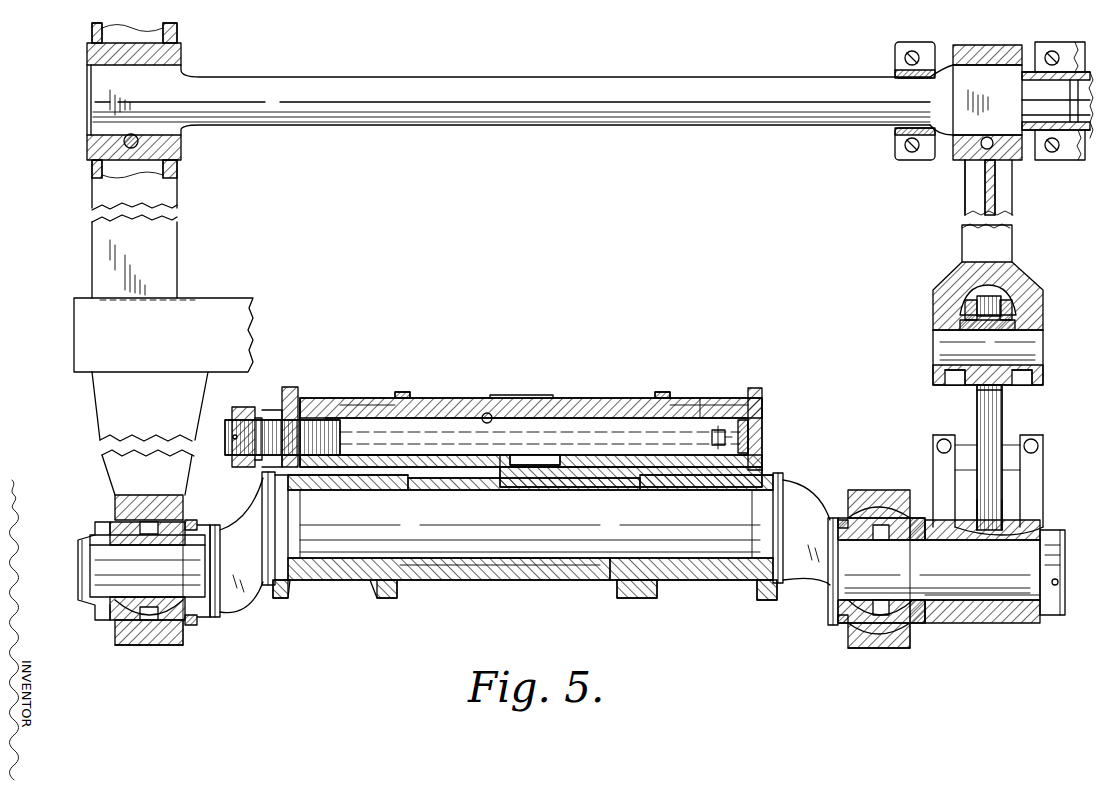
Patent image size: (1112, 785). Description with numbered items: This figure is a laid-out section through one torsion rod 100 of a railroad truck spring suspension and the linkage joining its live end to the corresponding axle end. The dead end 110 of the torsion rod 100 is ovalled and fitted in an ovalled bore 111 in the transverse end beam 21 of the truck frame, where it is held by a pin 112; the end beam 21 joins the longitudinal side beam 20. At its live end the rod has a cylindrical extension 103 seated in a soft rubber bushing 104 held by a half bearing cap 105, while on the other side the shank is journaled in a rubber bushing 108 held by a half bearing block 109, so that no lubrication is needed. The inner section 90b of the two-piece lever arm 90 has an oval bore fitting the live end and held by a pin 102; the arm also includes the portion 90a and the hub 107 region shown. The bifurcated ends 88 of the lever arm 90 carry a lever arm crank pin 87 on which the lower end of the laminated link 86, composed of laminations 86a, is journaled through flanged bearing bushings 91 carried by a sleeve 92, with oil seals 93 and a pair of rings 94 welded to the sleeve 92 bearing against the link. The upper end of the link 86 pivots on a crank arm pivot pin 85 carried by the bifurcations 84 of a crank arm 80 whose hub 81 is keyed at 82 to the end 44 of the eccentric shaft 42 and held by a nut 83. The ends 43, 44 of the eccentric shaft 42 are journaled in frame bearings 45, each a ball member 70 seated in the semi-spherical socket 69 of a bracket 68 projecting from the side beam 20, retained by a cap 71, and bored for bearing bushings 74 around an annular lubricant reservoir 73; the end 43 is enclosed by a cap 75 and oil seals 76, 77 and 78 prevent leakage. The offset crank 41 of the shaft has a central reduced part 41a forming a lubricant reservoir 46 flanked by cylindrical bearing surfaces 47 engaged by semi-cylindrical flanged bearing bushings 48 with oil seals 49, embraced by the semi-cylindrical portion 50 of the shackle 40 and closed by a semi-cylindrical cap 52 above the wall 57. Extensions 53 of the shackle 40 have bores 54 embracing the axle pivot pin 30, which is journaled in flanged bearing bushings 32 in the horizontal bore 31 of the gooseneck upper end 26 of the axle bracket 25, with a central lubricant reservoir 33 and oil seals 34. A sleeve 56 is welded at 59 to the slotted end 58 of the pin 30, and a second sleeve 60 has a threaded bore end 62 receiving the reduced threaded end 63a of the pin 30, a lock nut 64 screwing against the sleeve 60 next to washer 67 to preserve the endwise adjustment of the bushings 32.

The longitudinal side beam 20 is at (80, 337).
The transverse end beam 21 is at (177, 208).
The axle bracket 25 is at (532, 398).
The upper end of axle bracket 26 is at (505, 395).
The axle pivot pin 30 is at (590, 398).
The horizontal bore 31 is at (484, 402).
The flanged bearing bushing 32 is at (478, 396).
The lubricant reservoir 33 is at (560, 395).
The oil seal 34 is at (402, 396).
The shackle or link 40 is at (792, 398).
The offset central part or crank 41 is at (572, 560).
The central reduced part 41a is at (512, 580).
The crank or eccentric shaft 42 is at (816, 478).
The end of eccentric shaft 43 is at (100, 555).
The end of eccentric shaft 44 is at (940, 570).
The frame bearing 45 is at (198, 640).
The lubricant reservoir 46 is at (513, 560).
The cylindrical bearing surface 47 is at (522, 528).
The semi-cylindrical flanged bearing bushing 48 is at (350, 490).
The oil seal 49 is at (267, 590).
The semi-cylindrical portion 50 is at (458, 496).
The semi-cylindrical cap 52 is at (632, 580).
The extension 53 is at (287, 388).
The bore 54 is at (375, 397).
The sleeve 56 is at (718, 398).
The tube bottom wall 57 is at (360, 578).
The slot 58 is at (750, 440).
The weld 59 is at (758, 418).
The second sleeve 60 is at (350, 402).
The reduced threaded bore end 62 is at (320, 417).
The reduced threaded end 63a is at (229, 547).
The lock nut 64 is at (255, 405).
The washer 67 is at (270, 414).
The bracket 68 is at (102, 455).
The semi-spherical socket 69 is at (145, 510).
The ball member 70 is at (140, 640).
The cap 71 is at (170, 645).
The annular lubricant reservoir 73 is at (150, 642).
The bearing bushing 74 is at (190, 545).
The cap 75 is at (85, 595).
The oil seal 76 is at (200, 625).
The oil seal 77 is at (820, 630).
The oil seal 78 is at (925, 632).
The crank arm 80 is at (1057, 437).
The hub 81 is at (1010, 625).
The key 82 is at (975, 625).
The nut 83 is at (1050, 615).
The bifurcation 84 is at (952, 452).
The crank arm pivot pin 85 is at (1035, 508).
The laminated link or shackle 86 is at (1003, 418).
The lamination 86a is at (977, 413).
The lever arm crank pin 87 is at (1030, 344).
The bifurcated end 88 is at (935, 305).
The lever arm 90 is at (1026, 222).
The shaft section 90a is at (1015, 247).
The inner section of lever arm 90b is at (970, 195).
The flanged bearing bushing 91 is at (975, 326).
The sleeve 92 is at (940, 336).
The oil seal 93 is at (950, 388).
The ring 94 is at (963, 298).
The torsion rod 100 is at (575, 125).
The pin 102 is at (1000, 160).
The cylindrical extension 103 is at (1062, 98).
The bushing 104 is at (1075, 51).
The half bearing cap 105 is at (1037, 160).
The hub 107 is at (976, 90).
The rubber bushing 108 is at (895, 132).
The half bearing block or cap 109 is at (896, 56).
The dead end 110 is at (62, 34).
The ovalled bore 111 is at (100, 66).
The pin 112 is at (126, 140).